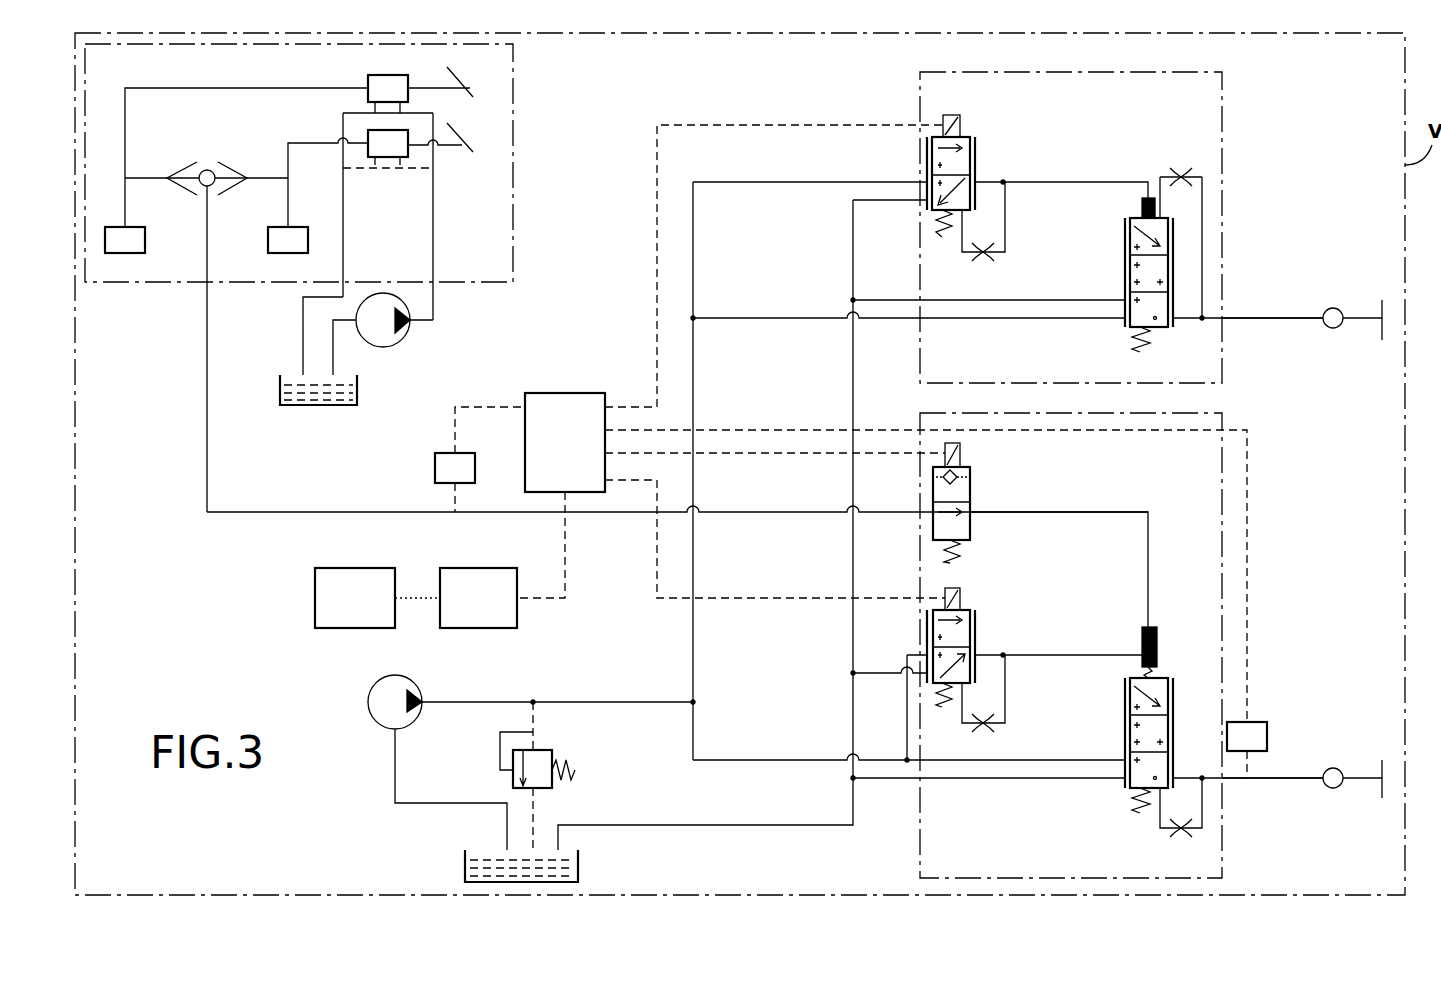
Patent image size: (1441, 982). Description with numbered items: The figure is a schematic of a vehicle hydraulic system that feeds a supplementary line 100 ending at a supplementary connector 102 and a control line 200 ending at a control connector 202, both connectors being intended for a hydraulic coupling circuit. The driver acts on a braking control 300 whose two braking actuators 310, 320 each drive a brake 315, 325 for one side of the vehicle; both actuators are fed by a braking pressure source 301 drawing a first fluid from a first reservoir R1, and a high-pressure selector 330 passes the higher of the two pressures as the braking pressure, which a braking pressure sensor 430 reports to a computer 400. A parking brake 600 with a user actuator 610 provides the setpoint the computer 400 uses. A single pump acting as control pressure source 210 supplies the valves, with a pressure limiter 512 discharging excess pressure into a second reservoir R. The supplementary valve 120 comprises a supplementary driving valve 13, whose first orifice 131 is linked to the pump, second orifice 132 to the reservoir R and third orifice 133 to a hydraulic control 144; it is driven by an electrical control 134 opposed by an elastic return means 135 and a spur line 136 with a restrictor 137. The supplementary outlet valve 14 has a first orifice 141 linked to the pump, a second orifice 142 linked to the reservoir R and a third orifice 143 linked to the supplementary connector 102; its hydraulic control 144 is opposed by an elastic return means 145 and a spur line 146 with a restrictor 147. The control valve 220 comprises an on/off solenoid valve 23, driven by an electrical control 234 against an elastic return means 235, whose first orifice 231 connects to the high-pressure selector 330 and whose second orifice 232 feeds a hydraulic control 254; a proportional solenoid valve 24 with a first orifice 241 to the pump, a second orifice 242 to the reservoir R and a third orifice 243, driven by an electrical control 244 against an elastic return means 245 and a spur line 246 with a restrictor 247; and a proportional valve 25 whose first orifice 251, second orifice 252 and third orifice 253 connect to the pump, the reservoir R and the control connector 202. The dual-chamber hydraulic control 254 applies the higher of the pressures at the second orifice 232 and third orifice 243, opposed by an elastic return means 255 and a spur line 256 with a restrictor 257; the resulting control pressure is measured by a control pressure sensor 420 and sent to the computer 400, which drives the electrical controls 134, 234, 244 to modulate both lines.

The braking control 300 is at (513, 127).
The braking actuator 310 is at (383, 78).
The braking actuator 320 is at (392, 160).
The high-pressure selector 330 is at (207, 170).
The brake 315 is at (135, 242).
The brake 325 is at (292, 236).
The braking pressure source 301 is at (385, 325).
The first reservoir R1 is at (280, 383).
The computer 400 is at (570, 395).
The braking pressure sensor 430 is at (440, 470).
The control pressure sensor 420 is at (1278, 712).
The parking brake 600 is at (375, 612).
The actuator 610 is at (500, 612).
The supplementary valve 120 is at (1222, 168).
The supplementary driving valve 13 is at (992, 142).
The first orifice 131 is at (928, 182).
The second orifice 132 is at (928, 208).
The third orifice 133 is at (975, 190).
The electrical control 134 is at (955, 118).
The elastic return means 135 is at (945, 237).
The spur line 136 is at (1005, 224).
The restrictor 137 is at (983, 258).
The supplementary outlet valve 14 is at (1110, 258).
The first orifice 141 is at (1125, 325).
The second orifice 142 is at (1125, 298).
The third orifice 143 is at (1175, 325).
The hydraulic control 144 is at (1142, 212).
The elastic return means 145 is at (1140, 347).
The spur line 146 is at (1203, 240).
The restrictor 147 is at (1175, 170).
The supplementary line 100 is at (1243, 318).
The supplementary connector 102 is at (1333, 308).
The control valve 220 is at (1222, 540).
The on/off solenoid valve 23 is at (990, 472).
The first orifice 231 is at (933, 512).
The second orifice 232 is at (975, 512).
The electrical control 234 is at (958, 455).
The elastic return means 235 is at (946, 555).
The proportional solenoid valve 24 is at (990, 613).
The first orifice 241 is at (928, 655).
The second orifice 242 is at (928, 682).
The third orifice 243 is at (975, 662).
The electrical control 244 is at (955, 590).
The elastic return means 245 is at (942, 700).
The spur line 246 is at (1005, 697).
The restrictor 247 is at (983, 728).
The proportional valve 25 is at (1110, 723).
The first orifice 251 is at (1125, 758).
The second orifice 252 is at (1125, 785).
The third orifice 253 is at (1176, 780).
The hydraulic control 254 is at (1158, 642).
The elastic return means 255 is at (1140, 808).
The spur line 256 is at (1203, 790).
The restrictor 257 is at (1178, 834).
The control line 200 is at (1292, 778).
The control connector 202 is at (1335, 768).
The control pressure source 210 is at (385, 710).
The pressure limiter 512 is at (513, 788).
The second reservoir R is at (465, 857).